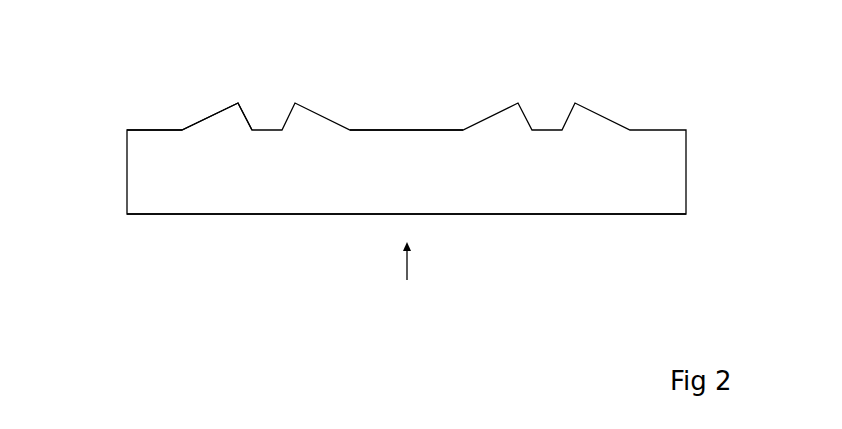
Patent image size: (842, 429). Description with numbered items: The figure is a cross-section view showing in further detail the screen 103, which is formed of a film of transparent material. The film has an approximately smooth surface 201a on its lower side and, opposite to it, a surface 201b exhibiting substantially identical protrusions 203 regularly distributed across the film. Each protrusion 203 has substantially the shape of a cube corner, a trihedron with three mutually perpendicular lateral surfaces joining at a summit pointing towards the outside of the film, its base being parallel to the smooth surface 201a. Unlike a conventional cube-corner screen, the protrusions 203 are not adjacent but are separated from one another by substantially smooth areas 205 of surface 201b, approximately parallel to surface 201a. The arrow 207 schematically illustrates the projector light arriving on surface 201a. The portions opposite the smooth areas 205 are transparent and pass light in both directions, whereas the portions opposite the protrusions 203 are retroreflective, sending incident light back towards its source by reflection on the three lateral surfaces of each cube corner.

The screen 103 is at (120, 173).
The smooth surface 201a is at (167, 217).
The surface opposite to smooth surface 201b is at (165, 130).
The protrusion 203 is at (218, 122).
The smooth area 205 is at (435, 130).
The arrow 207 is at (408, 265).